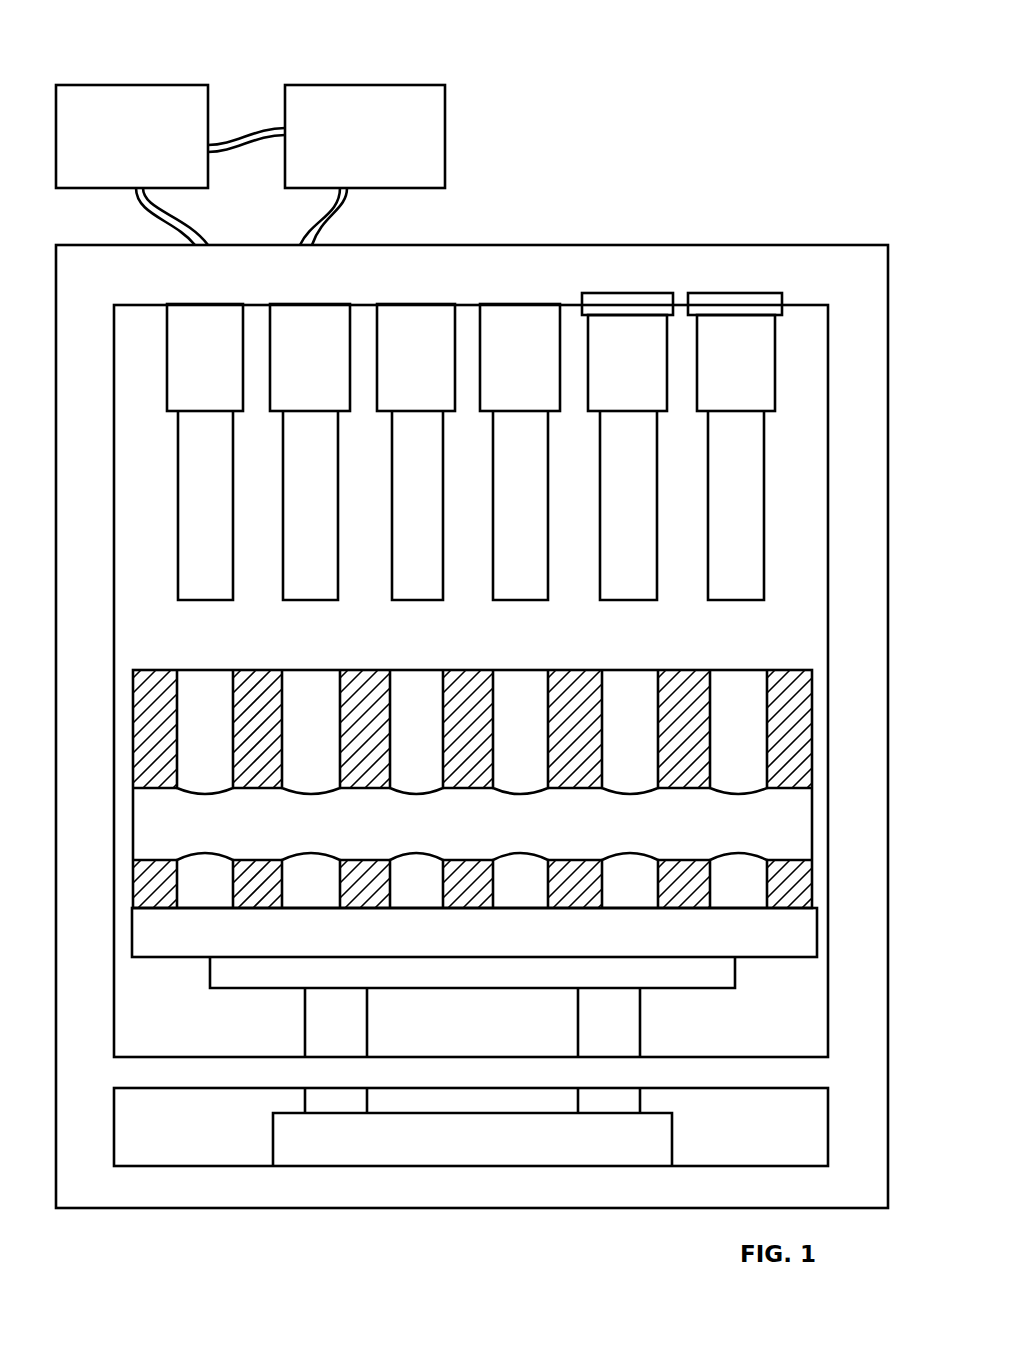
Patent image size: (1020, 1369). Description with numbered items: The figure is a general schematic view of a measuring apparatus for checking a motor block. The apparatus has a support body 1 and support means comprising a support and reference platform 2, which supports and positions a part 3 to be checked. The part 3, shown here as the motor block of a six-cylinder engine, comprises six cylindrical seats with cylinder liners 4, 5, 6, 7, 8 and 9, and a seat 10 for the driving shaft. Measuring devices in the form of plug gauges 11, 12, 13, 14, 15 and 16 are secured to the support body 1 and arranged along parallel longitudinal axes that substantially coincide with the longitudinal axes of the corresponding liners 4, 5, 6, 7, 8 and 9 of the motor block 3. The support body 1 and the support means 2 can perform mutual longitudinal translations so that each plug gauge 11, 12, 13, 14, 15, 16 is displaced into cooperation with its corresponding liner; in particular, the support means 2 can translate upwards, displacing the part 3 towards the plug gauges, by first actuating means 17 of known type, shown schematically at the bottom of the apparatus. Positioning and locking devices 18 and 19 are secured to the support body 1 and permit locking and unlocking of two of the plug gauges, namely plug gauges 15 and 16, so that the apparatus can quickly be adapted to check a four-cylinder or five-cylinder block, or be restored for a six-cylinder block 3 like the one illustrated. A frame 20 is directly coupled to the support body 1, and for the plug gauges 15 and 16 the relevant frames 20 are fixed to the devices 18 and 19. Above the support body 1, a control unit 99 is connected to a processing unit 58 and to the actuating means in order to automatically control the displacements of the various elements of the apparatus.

The support body 1 is at (105, 1187).
The support and reference platform 2 is at (210, 937).
The part to be checked 3 is at (312, 888).
The cylinder liner 4 is at (185, 693).
The cylinder liner 5 is at (303, 693).
The cylinder liner 6 is at (413, 693).
The cylinder liner 7 is at (513, 693).
The cylinder liner 8 is at (626, 693).
The cylinder liner 9 is at (733, 693).
The seat for the driving shaft 10 is at (790, 843).
The plug gauge 11 is at (222, 573).
The plug gauge 12 is at (329, 573).
The plug gauge 13 is at (431, 573).
The plug gauge 14 is at (540, 573).
The plug gauge 15 is at (645, 573).
The plug gauge 16 is at (754, 573).
The first actuating means 17 is at (390, 1140).
The positioning and locking device 18 is at (642, 302).
The positioning and locking device 19 is at (755, 302).
The frame 20 is at (790, 347).
The processing unit 58 is at (183, 118).
The control unit 99 is at (407, 133).